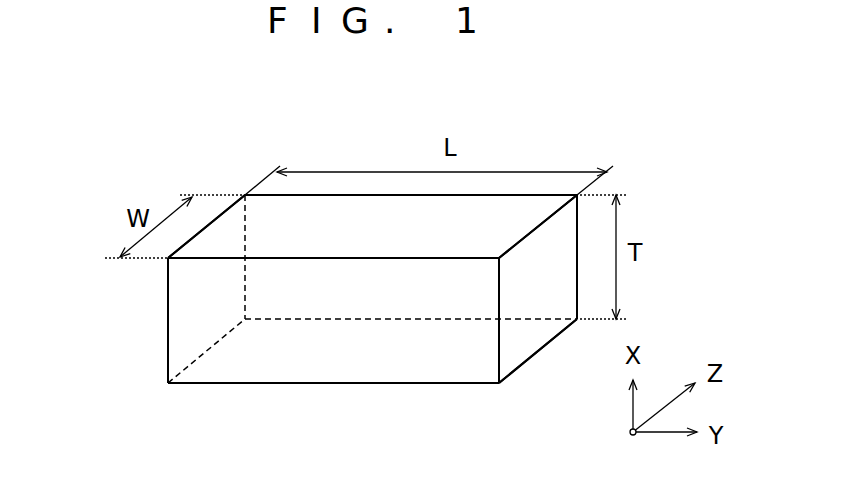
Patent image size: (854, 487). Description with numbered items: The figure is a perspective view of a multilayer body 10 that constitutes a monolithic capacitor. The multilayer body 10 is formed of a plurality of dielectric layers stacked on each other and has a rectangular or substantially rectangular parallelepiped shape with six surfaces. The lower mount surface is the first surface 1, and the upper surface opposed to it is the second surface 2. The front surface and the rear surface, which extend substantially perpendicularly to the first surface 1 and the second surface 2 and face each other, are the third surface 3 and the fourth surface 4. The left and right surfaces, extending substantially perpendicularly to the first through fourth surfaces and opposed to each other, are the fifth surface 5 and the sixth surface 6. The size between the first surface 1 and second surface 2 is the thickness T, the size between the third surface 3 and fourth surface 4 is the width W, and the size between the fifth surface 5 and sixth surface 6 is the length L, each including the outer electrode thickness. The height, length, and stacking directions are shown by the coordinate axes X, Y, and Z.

The multilayer body 10 is at (270, 114).
The first surface 1 is at (368, 384).
The second surface 2 is at (372, 226).
The third surface 3 is at (333, 320).
The fourth surface 4 is at (453, 195).
The fifth surface 5 is at (167, 310).
The sixth surface 6 is at (538, 289).